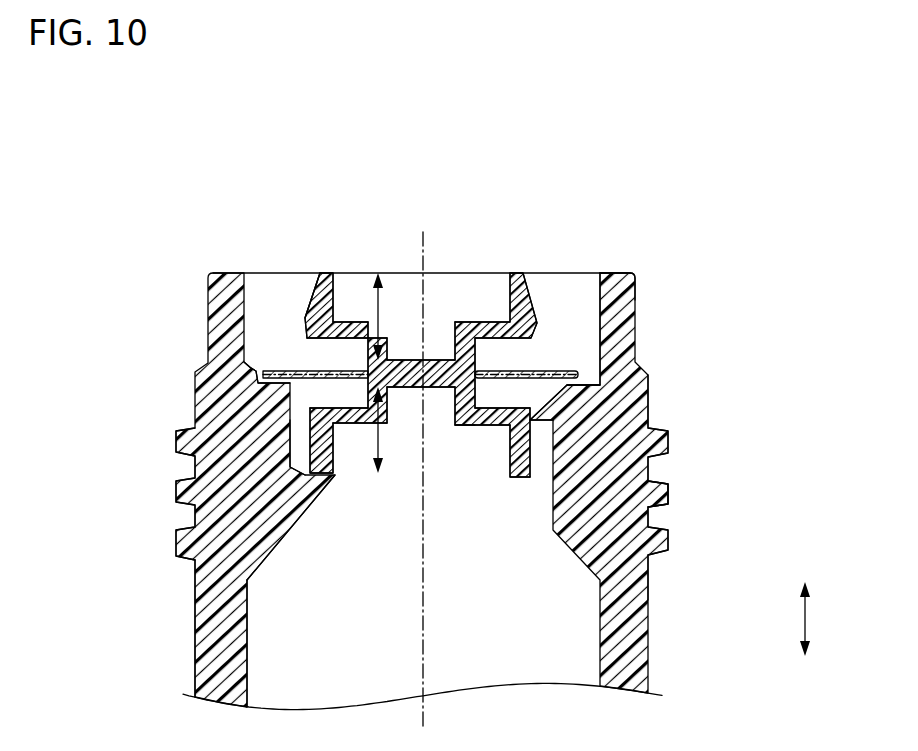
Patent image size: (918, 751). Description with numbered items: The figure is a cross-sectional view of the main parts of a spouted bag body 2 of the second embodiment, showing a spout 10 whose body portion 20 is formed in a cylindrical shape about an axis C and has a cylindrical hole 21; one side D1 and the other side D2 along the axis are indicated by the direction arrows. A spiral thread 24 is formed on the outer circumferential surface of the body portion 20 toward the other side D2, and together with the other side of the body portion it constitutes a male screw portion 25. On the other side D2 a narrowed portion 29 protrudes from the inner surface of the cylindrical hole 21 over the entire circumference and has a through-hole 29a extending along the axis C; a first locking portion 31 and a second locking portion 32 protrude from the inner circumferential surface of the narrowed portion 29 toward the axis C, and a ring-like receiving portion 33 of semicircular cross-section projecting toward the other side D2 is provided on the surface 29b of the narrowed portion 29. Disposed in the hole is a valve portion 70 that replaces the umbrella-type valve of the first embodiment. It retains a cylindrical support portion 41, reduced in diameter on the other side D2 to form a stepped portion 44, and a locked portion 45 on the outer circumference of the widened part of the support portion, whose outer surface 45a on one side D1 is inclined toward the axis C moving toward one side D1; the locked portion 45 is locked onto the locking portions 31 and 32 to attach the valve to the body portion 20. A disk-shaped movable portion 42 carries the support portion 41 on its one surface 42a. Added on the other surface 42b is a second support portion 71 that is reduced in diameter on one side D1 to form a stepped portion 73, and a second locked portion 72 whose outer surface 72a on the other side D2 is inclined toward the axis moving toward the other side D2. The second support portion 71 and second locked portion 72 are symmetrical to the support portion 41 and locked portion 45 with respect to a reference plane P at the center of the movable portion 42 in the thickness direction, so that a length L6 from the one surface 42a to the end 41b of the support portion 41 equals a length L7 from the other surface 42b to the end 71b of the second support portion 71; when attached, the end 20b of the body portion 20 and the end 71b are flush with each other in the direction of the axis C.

The spouted bag body 2 is at (88, 188).
The spout 10 is at (154, 286).
The body portion 20 is at (650, 300).
The end of the body portion 20b is at (617, 270).
The cylindrical hole 21 is at (256, 650).
The thread 24 is at (670, 495).
The male screw portion 25 is at (682, 409).
The narrowed portion 29 is at (283, 450).
The through-hole 29a is at (299, 440).
The surface of the narrowed portion 29b is at (256, 382).
The first locking portion 31 is at (558, 416).
The second locking portion 32 is at (313, 497).
The receiving portion 33 is at (566, 385).
The support portion 41 is at (352, 426).
The end of the support portion 41b is at (518, 478).
The movable portion 42 is at (288, 375).
The one surface of the movable portion 42a is at (497, 390).
The other surface of the movable portion 42b is at (498, 392).
The stepped portion 44 is at (347, 407).
The locked portion 45 is at (525, 416).
The outer surface of the locked portion 45a is at (532, 445).
The valve portion 70 is at (320, 236).
The second support portion 71 is at (378, 345).
The end of the second support portion 71b is at (527, 272).
The second locked portion 72 is at (304, 316).
The outer surface of the second locked portion 72a is at (306, 300).
The stepped portion 73 is at (348, 342).
The reference plane P is at (530, 374).
The axis C is at (438, 262).
The length L6 is at (392, 430).
The length L7 is at (394, 316).
The one side D1 is at (806, 640).
The other side D2 is at (806, 575).